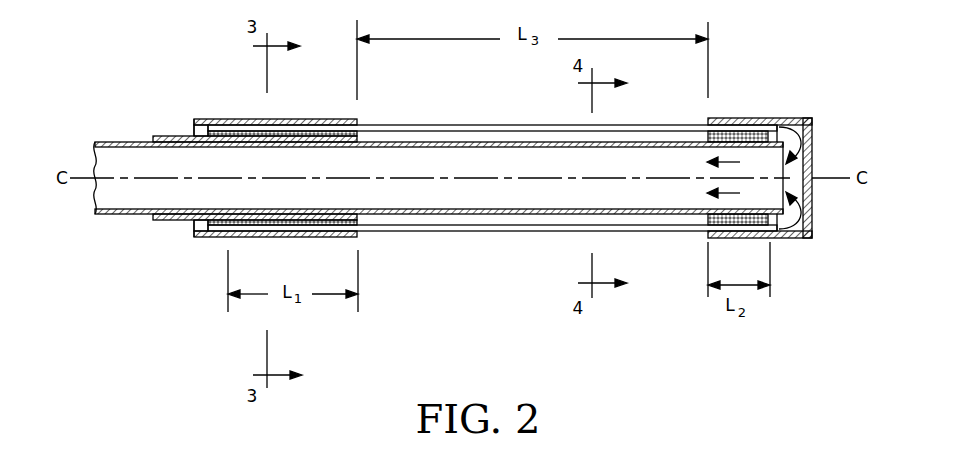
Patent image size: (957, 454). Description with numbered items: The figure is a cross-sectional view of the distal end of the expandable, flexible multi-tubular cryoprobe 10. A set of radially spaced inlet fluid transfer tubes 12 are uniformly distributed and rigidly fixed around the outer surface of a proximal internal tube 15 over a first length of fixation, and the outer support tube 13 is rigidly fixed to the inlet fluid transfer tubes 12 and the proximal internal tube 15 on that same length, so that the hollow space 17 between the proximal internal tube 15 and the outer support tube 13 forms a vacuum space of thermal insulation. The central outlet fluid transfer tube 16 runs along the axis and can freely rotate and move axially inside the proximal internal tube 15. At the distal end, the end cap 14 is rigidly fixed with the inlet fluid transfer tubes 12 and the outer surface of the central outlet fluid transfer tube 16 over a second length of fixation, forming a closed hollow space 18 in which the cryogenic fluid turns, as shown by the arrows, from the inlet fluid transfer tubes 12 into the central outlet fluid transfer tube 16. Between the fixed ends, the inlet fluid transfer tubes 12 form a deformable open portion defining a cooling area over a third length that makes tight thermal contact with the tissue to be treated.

The cryoprobe 10 is at (470, 181).
The inlet fluid transfer tubes 12 is at (408, 132).
The outer support tube 13 is at (240, 120).
The end cap 14 is at (757, 120).
The proximal internal tube 15 is at (170, 137).
The central outlet fluid transfer tube 16 is at (502, 145).
The vacuum space of insulation 17 is at (200, 130).
The closed hollow space 18 is at (800, 163).